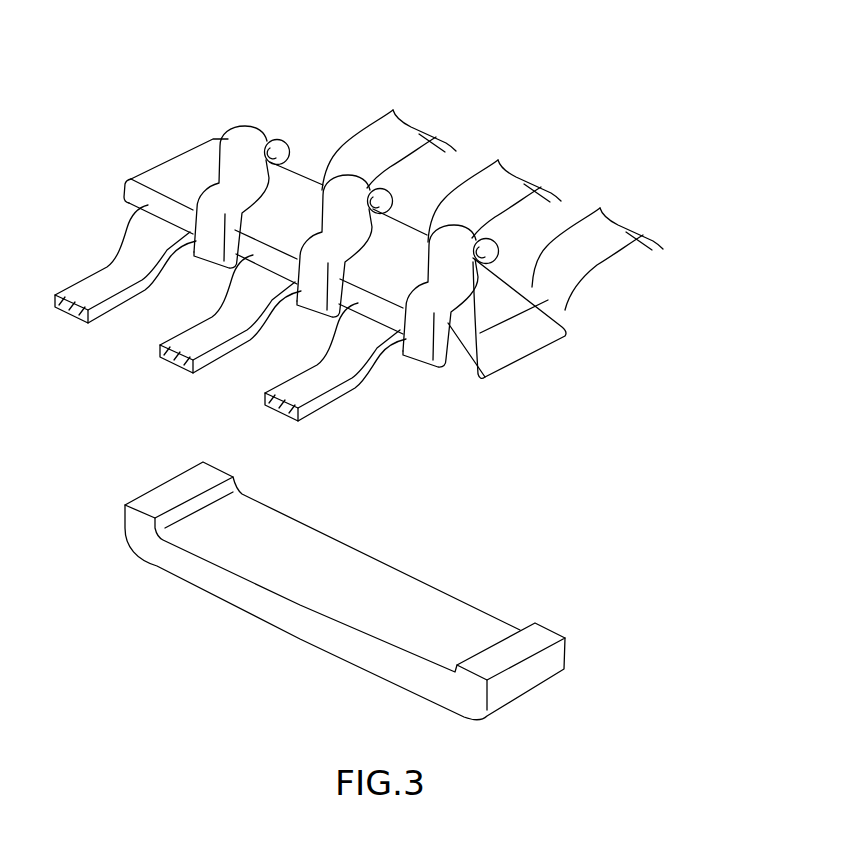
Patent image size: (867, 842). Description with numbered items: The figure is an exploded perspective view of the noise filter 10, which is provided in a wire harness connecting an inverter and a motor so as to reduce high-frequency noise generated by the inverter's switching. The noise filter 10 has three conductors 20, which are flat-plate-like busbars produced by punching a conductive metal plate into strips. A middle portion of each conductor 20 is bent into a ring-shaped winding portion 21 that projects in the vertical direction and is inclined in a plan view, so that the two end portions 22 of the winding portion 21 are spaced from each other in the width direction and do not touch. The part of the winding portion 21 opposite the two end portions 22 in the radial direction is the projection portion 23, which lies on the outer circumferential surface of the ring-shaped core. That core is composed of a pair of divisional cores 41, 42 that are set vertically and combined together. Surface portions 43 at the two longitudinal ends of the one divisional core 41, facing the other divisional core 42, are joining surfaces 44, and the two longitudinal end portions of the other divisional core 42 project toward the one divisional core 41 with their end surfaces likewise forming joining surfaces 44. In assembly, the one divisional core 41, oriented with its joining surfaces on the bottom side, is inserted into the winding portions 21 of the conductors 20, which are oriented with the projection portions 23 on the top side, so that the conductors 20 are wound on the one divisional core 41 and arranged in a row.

The noise filter 10 is at (370, 246).
The conductor 20 is at (370, 233).
The winding portion 21 is at (262, 122).
The end portions 22 is at (242, 276).
The projection portion 23 is at (243, 190).
The divisional core 41 is at (312, 271).
The divisional core 42 is at (351, 566).
The surface portions 43 is at (133, 210).
The joining surfaces 44 is at (187, 490).